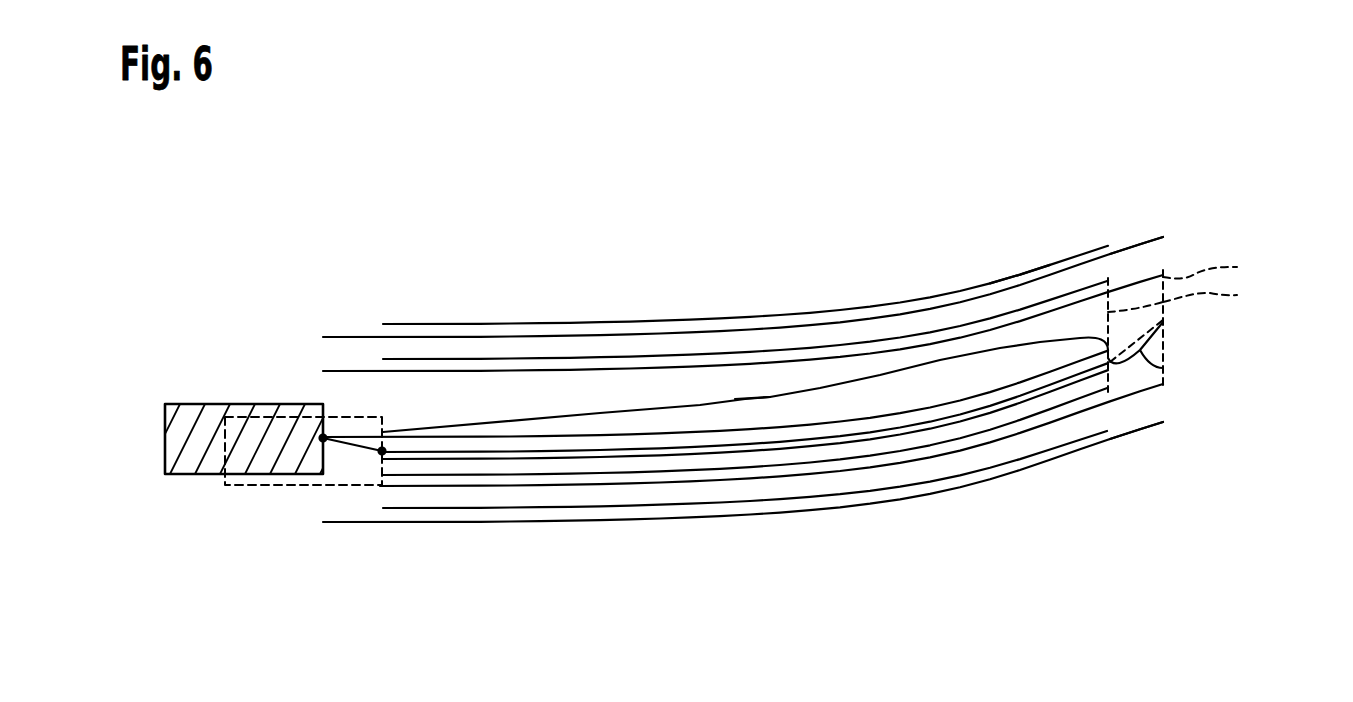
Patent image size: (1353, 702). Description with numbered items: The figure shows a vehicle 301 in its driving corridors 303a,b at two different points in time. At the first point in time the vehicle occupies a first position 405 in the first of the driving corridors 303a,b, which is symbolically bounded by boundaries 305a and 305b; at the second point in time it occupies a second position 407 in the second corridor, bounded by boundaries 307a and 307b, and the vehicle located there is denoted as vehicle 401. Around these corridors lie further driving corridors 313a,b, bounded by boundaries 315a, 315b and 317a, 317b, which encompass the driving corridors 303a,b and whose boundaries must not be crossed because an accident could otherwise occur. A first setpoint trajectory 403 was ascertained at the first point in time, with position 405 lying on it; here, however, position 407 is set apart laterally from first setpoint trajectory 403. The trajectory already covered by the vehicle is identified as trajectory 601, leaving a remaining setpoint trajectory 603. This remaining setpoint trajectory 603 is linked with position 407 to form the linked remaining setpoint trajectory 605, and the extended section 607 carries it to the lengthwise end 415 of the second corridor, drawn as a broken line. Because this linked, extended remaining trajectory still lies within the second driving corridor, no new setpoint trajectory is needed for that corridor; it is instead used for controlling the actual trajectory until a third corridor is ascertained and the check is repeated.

The vehicle 301 is at (175, 404).
The driving corridors 303a,b is at (591, 401).
The boundary 305a is at (408, 369).
The boundary 305b is at (442, 487).
The boundary 307a is at (500, 359).
The boundary 307b is at (518, 476).
The further driving corridors 313a,b is at (1038, 261).
The boundary 315a is at (347, 337).
The boundary 315b is at (603, 522).
The boundary 317a is at (1148, 241).
The boundary 317b is at (1132, 438).
The vehicle at second position 401 is at (248, 492).
The first setpoint trajectory 403 is at (840, 422).
The first position 405 is at (323, 438).
The second position 407 is at (376, 455).
The lengthwise end 415 is at (1195, 323).
The trajectory already covered 601 is at (347, 443).
The remaining setpoint trajectory 603 is at (745, 399).
The linked remaining setpoint trajectory 605 is at (740, 463).
The extended section 607 is at (1163, 368).